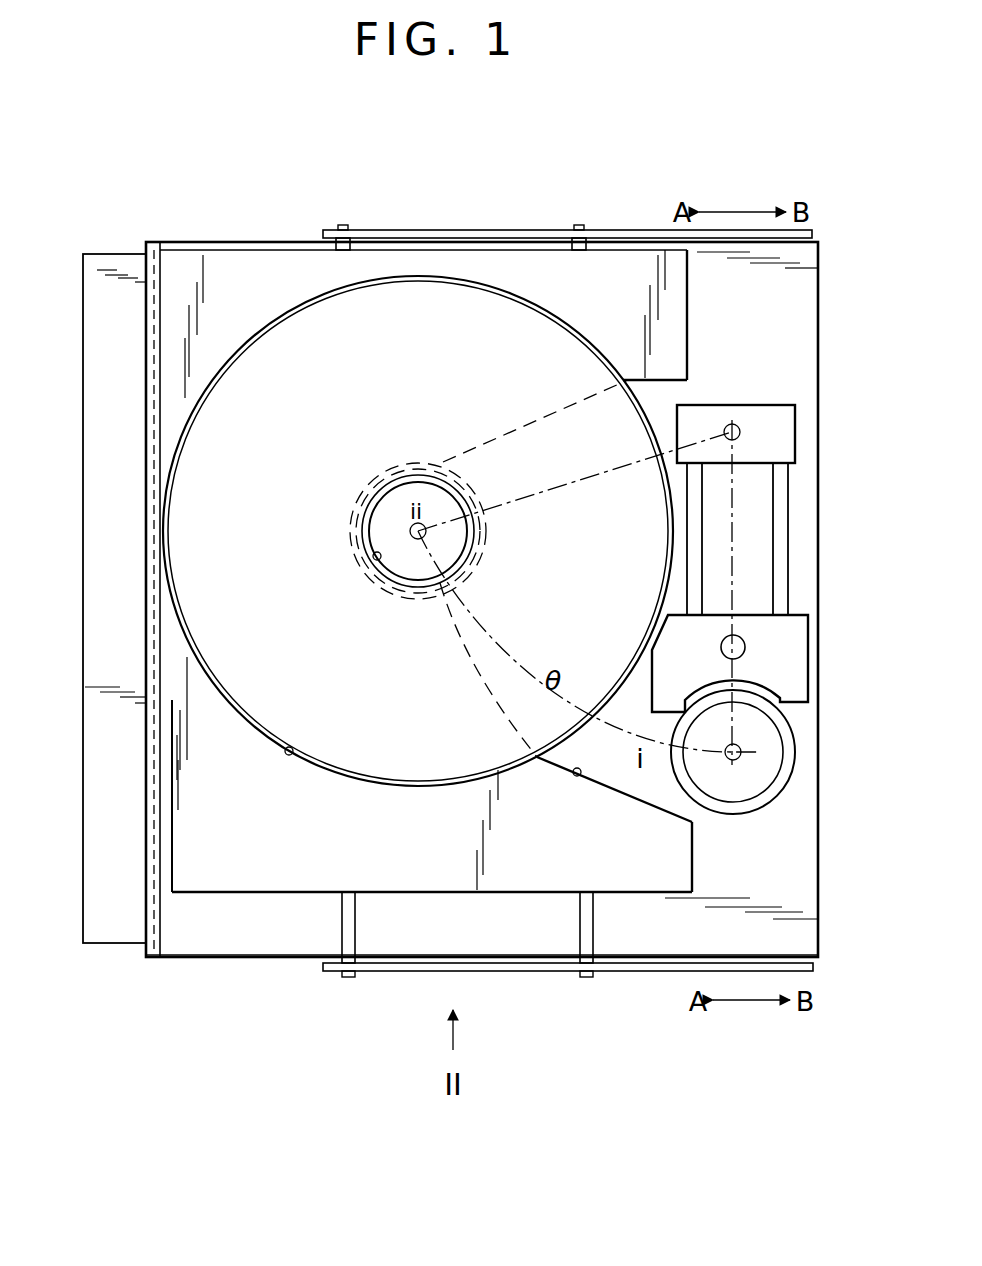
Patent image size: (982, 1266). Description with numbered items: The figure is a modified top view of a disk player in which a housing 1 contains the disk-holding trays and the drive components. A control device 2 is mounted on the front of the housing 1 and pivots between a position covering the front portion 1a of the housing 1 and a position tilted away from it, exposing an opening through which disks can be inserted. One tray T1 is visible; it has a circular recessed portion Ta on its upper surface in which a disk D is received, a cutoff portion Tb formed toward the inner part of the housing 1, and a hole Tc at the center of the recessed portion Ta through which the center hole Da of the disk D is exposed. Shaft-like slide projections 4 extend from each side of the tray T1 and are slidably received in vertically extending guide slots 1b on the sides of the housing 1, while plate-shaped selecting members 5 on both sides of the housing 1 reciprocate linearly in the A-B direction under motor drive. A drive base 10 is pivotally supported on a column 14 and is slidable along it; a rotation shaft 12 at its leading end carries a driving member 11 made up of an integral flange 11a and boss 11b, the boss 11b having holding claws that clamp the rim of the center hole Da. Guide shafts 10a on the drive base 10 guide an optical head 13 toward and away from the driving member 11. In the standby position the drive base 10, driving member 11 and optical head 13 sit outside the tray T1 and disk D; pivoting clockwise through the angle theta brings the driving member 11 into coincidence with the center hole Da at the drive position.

The housing 1 is at (197, 962).
The front portion 1a is at (160, 766).
The guide slot 1b is at (340, 952).
The control device 2 is at (117, 950).
The slide projection 4 is at (345, 243).
The selecting member 5 is at (455, 235).
The drive base 10 is at (792, 518).
The guide shaft 10a is at (782, 562).
The driving member 11 is at (790, 794).
The flange 11a is at (478, 545).
The boss 11b is at (460, 563).
The rotation shaft 12 is at (410, 531).
The optical head 13 is at (792, 655).
The column 14 is at (738, 432).
The disk D is at (410, 773).
The center hole Da is at (378, 557).
The recessed portion Ta is at (290, 762).
The cutoff portion Tb is at (577, 773).
The hole Tc is at (393, 600).
The tray T1 is at (243, 878).